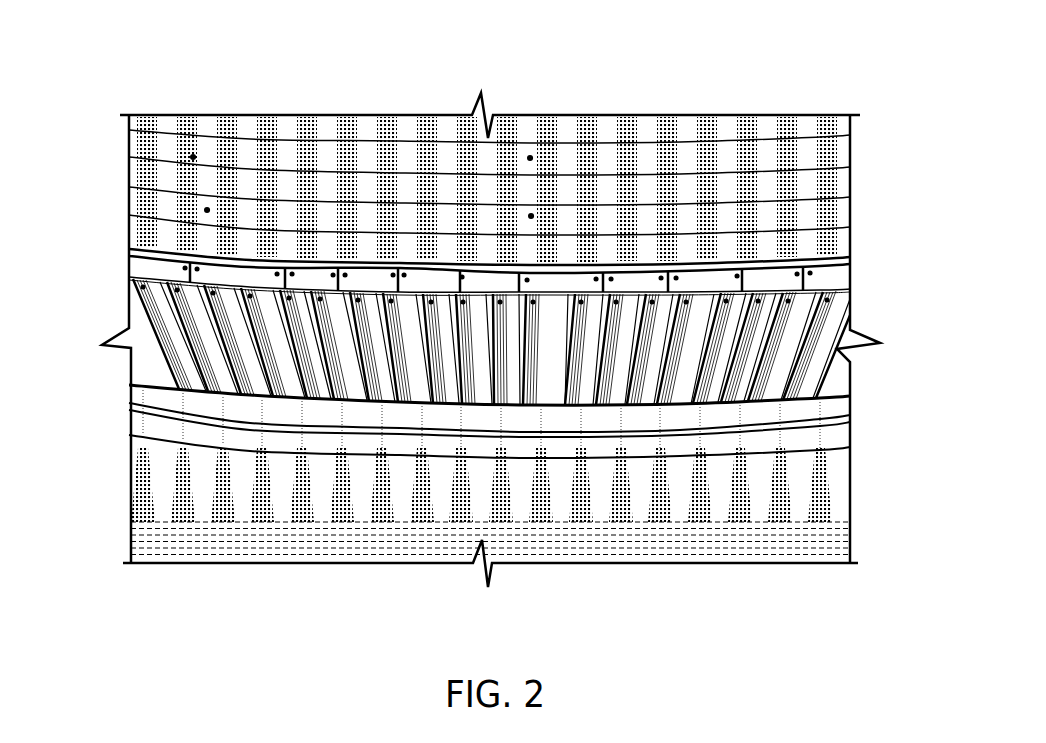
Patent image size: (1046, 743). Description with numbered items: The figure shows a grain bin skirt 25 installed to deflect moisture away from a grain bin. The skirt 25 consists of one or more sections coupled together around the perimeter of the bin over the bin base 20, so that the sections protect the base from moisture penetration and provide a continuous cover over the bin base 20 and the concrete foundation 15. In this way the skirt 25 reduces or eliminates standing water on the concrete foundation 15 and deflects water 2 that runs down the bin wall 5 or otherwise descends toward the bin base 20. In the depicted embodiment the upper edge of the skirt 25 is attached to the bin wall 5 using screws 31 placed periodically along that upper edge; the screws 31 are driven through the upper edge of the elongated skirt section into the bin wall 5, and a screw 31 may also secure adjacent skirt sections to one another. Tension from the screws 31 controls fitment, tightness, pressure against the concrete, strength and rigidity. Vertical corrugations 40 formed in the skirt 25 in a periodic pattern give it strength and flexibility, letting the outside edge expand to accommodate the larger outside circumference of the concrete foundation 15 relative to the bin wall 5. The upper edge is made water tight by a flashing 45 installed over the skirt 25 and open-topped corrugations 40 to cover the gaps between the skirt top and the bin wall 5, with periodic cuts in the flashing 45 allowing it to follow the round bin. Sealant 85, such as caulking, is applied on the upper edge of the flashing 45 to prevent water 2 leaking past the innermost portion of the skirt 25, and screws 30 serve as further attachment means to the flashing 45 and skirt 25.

The water 2 is at (130, 530).
The bin wall 5 is at (731, 200).
The concrete foundation 15 is at (129, 407).
The bin base 20 is at (405, 418).
The bin skirt 25 is at (335, 265).
The screws 30 is at (679, 268).
The screws 31 is at (427, 290).
The vertical corrugations 40 is at (722, 342).
The flashing 45 is at (213, 268).
The sealant 85 is at (560, 275).